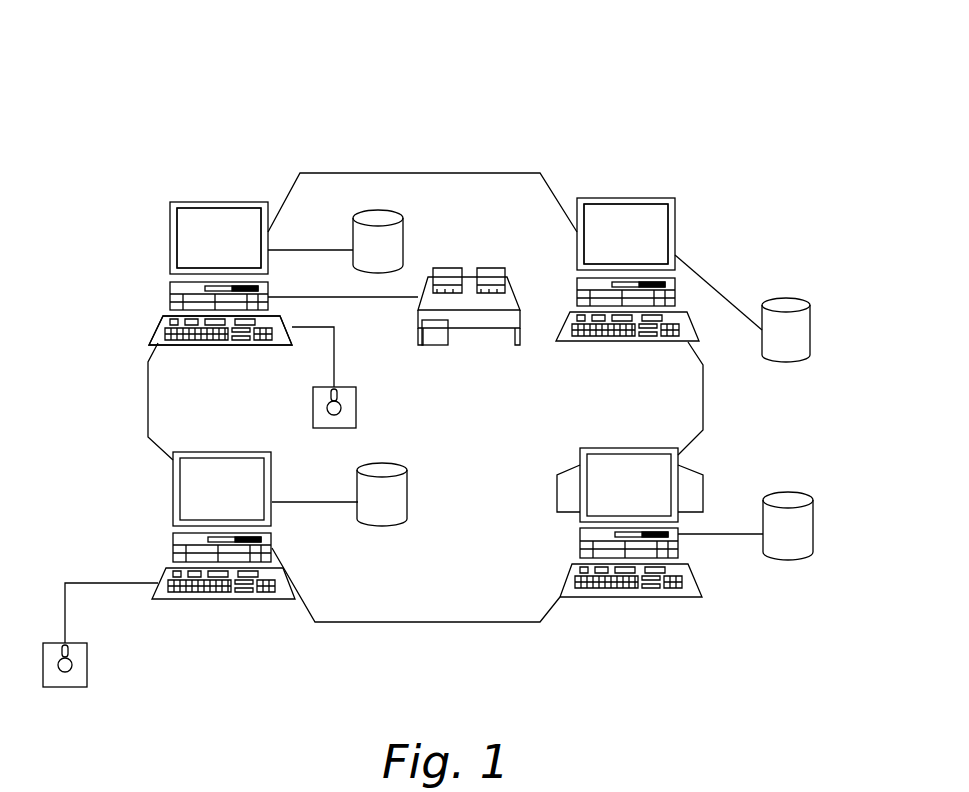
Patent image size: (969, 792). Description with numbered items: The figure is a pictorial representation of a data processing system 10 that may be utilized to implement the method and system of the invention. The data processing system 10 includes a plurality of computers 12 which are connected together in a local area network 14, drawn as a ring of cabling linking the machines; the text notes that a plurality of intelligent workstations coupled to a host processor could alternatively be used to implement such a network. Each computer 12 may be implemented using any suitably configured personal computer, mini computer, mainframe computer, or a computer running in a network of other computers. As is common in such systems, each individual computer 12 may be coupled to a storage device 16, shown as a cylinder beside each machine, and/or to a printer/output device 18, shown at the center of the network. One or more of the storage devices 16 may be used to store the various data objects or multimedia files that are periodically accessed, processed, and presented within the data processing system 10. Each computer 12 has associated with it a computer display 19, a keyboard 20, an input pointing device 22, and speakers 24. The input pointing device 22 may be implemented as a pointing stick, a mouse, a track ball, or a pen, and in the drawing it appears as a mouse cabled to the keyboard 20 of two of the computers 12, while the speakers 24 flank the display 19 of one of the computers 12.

The data processing system 10 is at (432, 98).
The computer 12 is at (196, 202).
The local area network 14 is at (443, 622).
The storage device 16 is at (403, 240).
The printer/output device 18 is at (467, 269).
The computer display 19 is at (188, 244).
The keyboard 20 is at (158, 333).
The input pointing device 22 is at (313, 408).
The speakers 24 is at (703, 490).